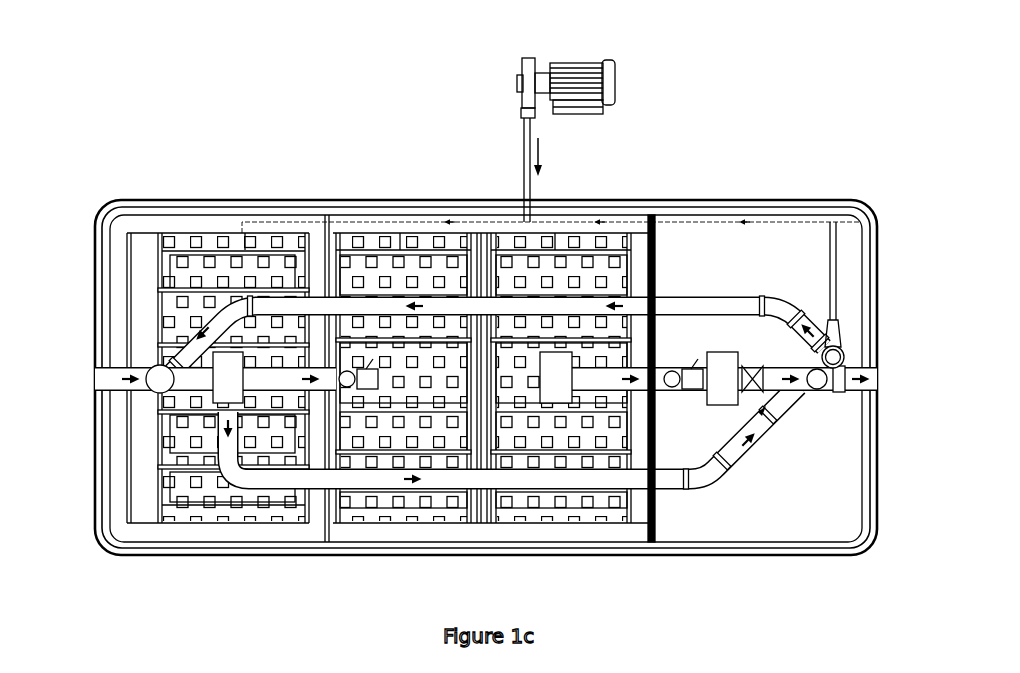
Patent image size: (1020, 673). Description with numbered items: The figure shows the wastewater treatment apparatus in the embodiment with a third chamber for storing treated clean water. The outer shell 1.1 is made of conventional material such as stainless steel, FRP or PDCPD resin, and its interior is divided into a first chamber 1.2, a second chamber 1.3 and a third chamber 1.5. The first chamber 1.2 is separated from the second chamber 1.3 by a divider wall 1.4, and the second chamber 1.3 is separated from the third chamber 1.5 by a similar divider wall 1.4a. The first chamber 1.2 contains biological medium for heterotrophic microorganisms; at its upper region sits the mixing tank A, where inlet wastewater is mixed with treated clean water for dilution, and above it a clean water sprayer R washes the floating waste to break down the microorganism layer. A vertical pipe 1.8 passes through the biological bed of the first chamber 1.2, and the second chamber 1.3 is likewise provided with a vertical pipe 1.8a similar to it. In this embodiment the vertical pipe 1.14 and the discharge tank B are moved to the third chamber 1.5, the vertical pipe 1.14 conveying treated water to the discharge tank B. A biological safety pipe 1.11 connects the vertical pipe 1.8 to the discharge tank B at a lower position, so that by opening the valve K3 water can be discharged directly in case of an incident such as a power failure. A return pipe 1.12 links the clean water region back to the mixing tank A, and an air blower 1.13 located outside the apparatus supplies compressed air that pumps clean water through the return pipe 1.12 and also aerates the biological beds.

The shell 1.1 is at (99, 212).
The first chamber 1.2 is at (163, 532).
The second chamber 1.3 is at (410, 527).
The divider wall 1.4 is at (322, 238).
The divider wall 1.4a is at (653, 232).
The third chamber 1.5 is at (822, 505).
The vertical pipe 1.8 is at (230, 380).
The vertical pipe 1.8a is at (553, 373).
The biological safety pipe 1.11 is at (372, 478).
The return pipe 1.12 is at (372, 305).
The air blower 1.13 is at (612, 80).
The vertical pipe 1.14 is at (723, 387).
The mixing tank A is at (148, 367).
The discharge tank B is at (842, 362).
The valve K3 is at (770, 417).
The clean water sprayer R is at (222, 522).